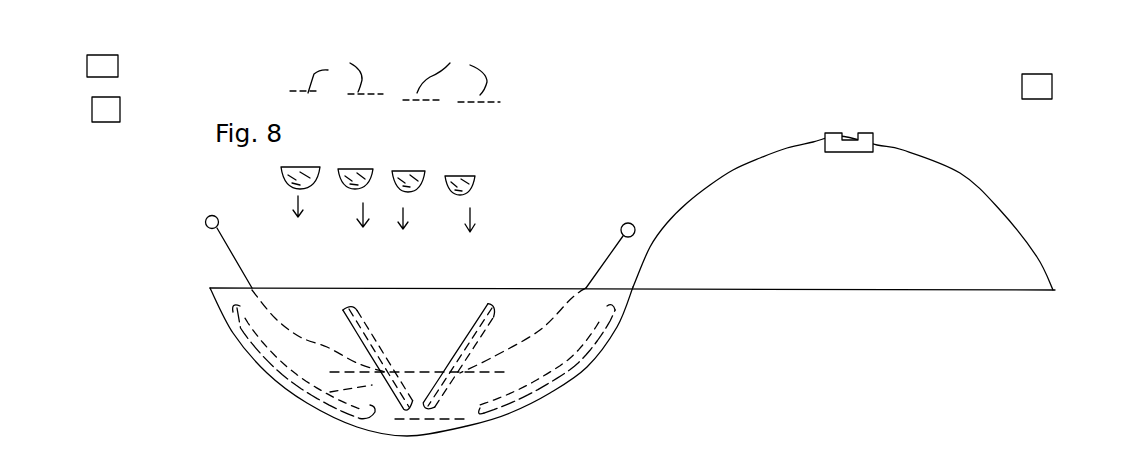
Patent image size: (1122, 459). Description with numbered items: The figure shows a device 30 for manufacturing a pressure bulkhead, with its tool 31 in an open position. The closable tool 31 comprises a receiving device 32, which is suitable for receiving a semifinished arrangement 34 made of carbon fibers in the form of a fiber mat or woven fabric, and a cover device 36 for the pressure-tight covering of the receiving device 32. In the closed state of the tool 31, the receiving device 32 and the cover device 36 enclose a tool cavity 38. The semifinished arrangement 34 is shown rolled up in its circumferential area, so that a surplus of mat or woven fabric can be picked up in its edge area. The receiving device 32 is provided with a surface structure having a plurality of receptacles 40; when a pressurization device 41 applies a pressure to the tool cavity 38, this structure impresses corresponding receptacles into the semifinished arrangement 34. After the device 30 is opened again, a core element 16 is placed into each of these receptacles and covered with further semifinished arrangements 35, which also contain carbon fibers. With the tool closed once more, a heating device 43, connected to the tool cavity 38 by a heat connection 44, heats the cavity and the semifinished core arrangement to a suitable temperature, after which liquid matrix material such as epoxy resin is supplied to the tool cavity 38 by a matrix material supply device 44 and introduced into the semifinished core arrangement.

The device 30 is at (686, 98).
The tool 31 is at (540, 160).
The receiving device 32 is at (585, 362).
The semifinished arrangement 34 is at (238, 255).
The further semifinished arrangements 35 is at (395, 70).
The cover device 36 is at (968, 180).
The tool cavity 38 is at (422, 340).
The receptacles 40 is at (383, 373).
The pressurization device 41 is at (1052, 86).
The heating device 43 is at (120, 110).
The matrix material supply device 44 is at (118, 64).
The core element 16 is at (357, 166).